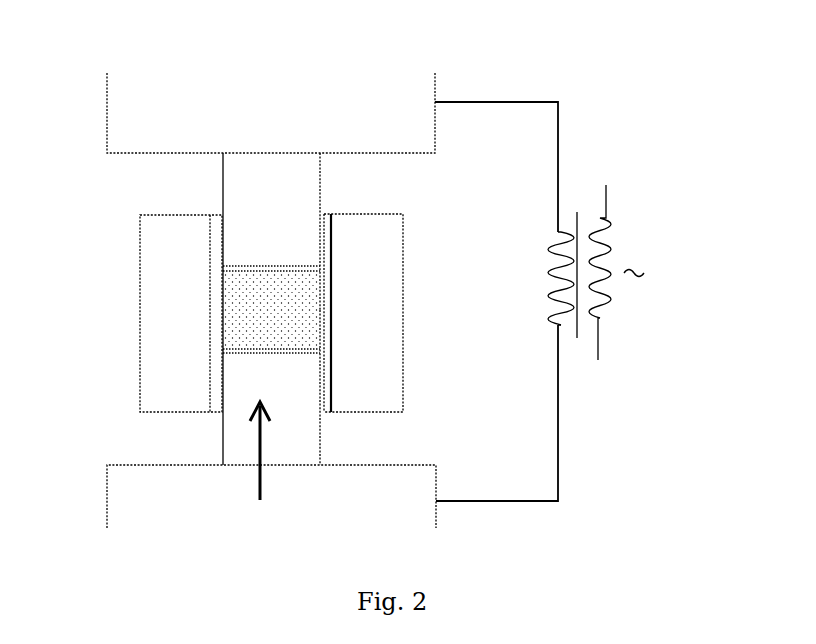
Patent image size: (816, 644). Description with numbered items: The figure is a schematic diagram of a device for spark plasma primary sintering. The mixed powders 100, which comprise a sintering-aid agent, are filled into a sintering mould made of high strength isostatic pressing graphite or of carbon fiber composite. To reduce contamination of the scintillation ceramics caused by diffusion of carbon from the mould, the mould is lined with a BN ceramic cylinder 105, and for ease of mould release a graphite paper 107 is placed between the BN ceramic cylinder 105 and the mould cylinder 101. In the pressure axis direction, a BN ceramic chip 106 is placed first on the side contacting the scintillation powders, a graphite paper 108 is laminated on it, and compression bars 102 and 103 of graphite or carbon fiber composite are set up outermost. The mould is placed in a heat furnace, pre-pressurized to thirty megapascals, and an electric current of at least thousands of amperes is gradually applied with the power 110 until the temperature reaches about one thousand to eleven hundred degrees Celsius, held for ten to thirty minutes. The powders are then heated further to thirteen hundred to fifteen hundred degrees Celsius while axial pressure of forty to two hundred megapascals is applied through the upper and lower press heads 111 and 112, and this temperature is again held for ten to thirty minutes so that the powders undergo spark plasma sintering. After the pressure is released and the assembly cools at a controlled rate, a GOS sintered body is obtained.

The mixed powders 100 is at (308, 343).
The mould cylinder 101 is at (383, 253).
The compression bar 102 is at (308, 440).
The compression bar 103 is at (288, 197).
The BN ceramic cylinder 105 is at (326, 302).
The BN ceramic chip 106 is at (263, 271).
The graphite paper 107 is at (333, 276).
The graphite paper 108 is at (292, 263).
The power 110 is at (560, 177).
The upper press head 111 is at (319, 101).
The lower press head 112 is at (398, 533).